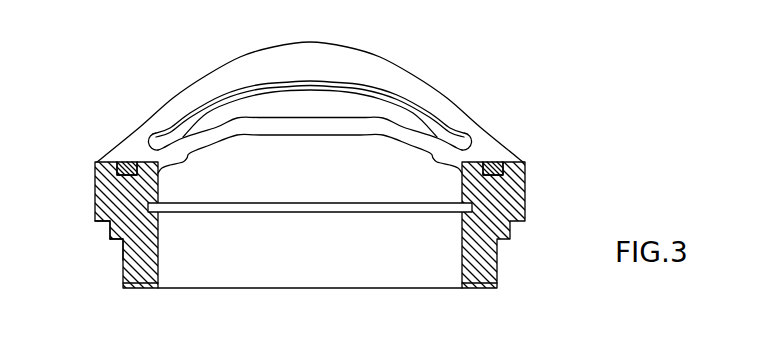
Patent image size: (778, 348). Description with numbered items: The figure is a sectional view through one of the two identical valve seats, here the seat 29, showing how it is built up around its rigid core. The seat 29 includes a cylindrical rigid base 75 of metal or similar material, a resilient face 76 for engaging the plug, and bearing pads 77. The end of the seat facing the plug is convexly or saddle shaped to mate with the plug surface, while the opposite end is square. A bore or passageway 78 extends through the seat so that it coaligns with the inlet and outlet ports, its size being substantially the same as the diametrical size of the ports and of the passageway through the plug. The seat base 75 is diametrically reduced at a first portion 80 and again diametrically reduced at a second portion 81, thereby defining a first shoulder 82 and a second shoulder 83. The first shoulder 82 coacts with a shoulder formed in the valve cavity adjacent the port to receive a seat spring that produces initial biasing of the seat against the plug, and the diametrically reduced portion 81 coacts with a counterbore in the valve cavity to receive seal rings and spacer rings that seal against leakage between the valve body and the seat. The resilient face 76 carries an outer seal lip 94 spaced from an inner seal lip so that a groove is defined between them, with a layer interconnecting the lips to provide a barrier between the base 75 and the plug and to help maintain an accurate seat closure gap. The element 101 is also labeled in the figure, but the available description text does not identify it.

The outer dome cover 29 is at (407, 67).
The thin film layer 94 is at (342, 57).
The inner support plate 101 is at (310, 86).
The diaphragm 76 is at (447, 117).
The gasket 77 is at (137, 145).
The housing ring upper step 82 is at (97, 219).
The housing ring middle step 80 is at (110, 236).
The housing ring lower wall 83 is at (121, 245).
The bottom lip 81 is at (122, 278).
The housing ring 75 is at (484, 226).
The back plate 78 is at (462, 258).